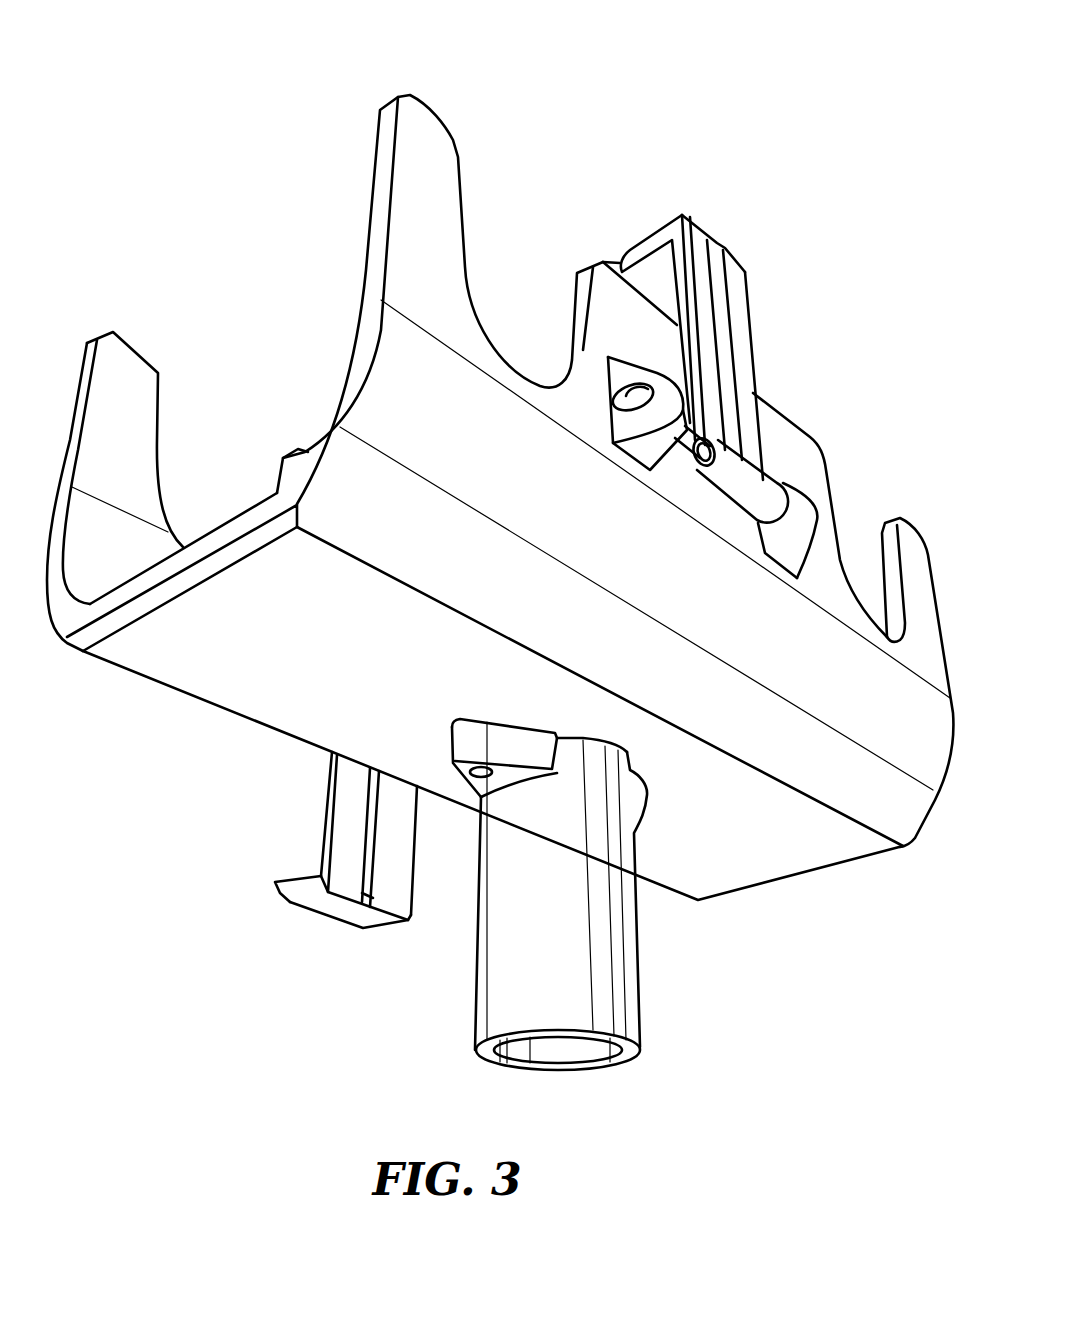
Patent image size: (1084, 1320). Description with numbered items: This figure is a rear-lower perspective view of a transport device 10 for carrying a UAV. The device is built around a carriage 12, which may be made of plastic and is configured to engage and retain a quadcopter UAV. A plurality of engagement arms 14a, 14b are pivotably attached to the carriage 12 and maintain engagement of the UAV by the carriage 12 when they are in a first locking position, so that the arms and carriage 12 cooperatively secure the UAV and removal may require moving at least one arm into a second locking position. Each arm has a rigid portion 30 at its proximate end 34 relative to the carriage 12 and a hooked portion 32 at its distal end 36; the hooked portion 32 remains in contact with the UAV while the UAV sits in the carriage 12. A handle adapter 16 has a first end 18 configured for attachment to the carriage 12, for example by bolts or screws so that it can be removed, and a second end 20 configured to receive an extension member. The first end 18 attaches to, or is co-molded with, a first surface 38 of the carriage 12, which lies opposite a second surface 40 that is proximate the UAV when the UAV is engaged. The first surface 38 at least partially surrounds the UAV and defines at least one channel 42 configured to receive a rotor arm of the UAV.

The transport device 10 is at (282, 988).
The carriage 12 is at (853, 788).
The engagement arm 14a is at (737, 265).
The engagement arm 14b is at (413, 900).
The handle adapter 16 is at (606, 977).
The first end 18 is at (673, 848).
The second end 20 is at (608, 1073).
The rigid portion 30 is at (725, 315).
The hooked portion 32 is at (625, 232).
The proximate end 34 is at (767, 383).
The distal end 36 is at (662, 210).
The first surface 38 is at (690, 715).
The second surface 40 is at (133, 400).
The channel 42 is at (517, 278).